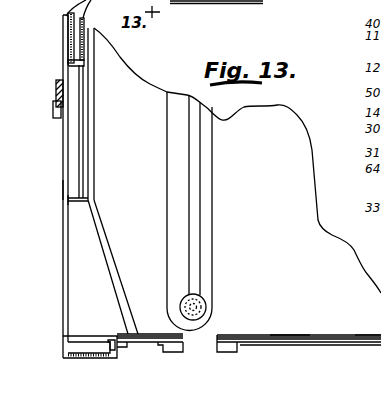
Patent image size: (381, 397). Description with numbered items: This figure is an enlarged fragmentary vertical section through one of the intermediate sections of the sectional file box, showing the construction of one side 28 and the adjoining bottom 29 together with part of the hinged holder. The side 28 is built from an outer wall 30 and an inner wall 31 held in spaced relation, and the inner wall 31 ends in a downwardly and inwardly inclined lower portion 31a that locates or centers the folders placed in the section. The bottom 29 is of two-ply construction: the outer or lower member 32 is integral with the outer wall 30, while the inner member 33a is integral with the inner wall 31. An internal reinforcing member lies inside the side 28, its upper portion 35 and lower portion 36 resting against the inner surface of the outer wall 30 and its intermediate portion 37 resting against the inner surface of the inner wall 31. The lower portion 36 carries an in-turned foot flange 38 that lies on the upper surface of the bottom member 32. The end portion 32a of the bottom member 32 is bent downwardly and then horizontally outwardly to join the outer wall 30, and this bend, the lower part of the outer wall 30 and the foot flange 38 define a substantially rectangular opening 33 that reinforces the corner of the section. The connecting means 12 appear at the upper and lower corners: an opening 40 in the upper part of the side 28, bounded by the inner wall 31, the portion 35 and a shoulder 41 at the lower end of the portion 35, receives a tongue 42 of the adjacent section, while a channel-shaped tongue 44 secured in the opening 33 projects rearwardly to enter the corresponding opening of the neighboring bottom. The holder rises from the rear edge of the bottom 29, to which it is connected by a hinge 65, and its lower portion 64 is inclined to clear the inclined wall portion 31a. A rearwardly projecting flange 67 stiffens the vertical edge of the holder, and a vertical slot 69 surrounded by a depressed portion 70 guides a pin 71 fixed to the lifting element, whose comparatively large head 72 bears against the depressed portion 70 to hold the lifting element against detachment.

The means for releasably connecting the sections 12 is at (49, 87).
The side 28 is at (56, 150).
The bottom 29 is at (376, 334).
The outer wall 30 is at (63, 183).
The inner wall 31 is at (89, 172).
The inclined lower portion 31a is at (118, 273).
The outer or lower member of the bottom 32 is at (283, 339).
The end portion of the bottom member 32a is at (110, 357).
The opening 33 is at (109, 341).
The inner member of the bottom 33a is at (290, 337).
The upper portion of reinforcing member 35 is at (68, 32).
The lower portion of reinforcing member 36 is at (68, 298).
The intermediate portion of reinforcing member 37 is at (79, 168).
The foot flange 38 is at (87, 340).
The opening 40 is at (79, 45).
The shoulder 41 is at (70, 61).
The tongue 42 is at (63, 17).
The tongue 44 is at (75, 349).
The lower portion of the holder 64 is at (104, 251).
The hinge 65 is at (202, 346).
The flange 67 is at (95, 148).
The slot 69 is at (199, 150).
The depressed portion 70 is at (211, 170).
The pin 71 is at (207, 300).
The head 72 is at (206, 308).